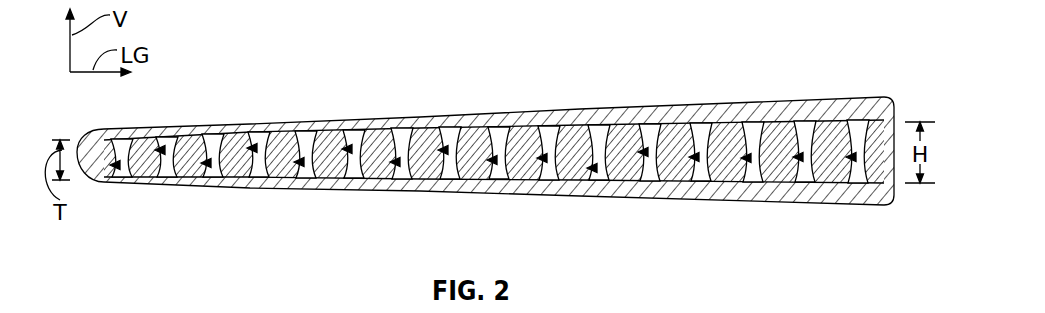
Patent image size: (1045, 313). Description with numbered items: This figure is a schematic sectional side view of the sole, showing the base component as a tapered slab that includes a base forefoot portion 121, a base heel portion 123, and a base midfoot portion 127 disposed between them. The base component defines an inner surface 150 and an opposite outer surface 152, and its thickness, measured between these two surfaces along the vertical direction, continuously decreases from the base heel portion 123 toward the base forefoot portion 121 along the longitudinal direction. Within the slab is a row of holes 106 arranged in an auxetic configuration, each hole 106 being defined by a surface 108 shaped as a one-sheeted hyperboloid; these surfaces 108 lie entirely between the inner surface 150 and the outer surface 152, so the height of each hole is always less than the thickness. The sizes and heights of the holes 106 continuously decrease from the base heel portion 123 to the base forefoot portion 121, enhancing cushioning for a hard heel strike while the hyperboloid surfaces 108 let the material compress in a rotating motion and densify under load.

The holes 106 is at (856, 124).
The surfaces 108 is at (855, 157).
The base forefoot portion 121 is at (80, 146).
The base heel portion 123 is at (879, 97).
The base midfoot portion 127 is at (523, 118).
The inner surface 150 is at (577, 112).
The outer surface 152 is at (668, 200).